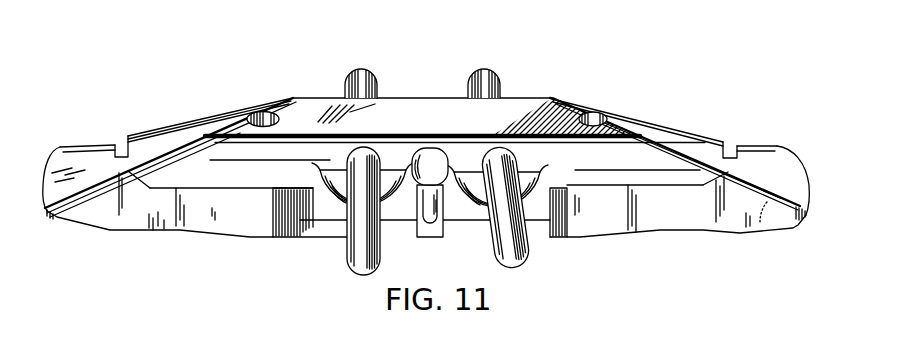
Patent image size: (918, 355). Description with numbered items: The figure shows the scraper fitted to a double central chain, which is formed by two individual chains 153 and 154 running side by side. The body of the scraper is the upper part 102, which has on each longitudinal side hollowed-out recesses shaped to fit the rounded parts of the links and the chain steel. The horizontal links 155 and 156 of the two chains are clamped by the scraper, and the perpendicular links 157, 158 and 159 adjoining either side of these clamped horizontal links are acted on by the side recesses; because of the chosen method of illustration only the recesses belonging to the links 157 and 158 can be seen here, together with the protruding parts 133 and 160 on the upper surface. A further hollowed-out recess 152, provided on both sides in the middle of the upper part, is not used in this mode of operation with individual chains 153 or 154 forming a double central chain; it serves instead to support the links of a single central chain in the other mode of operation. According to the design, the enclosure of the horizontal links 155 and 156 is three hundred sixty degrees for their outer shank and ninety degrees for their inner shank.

The body 102 is at (427, 171).
The hole 133 is at (600, 100).
The hollowed-out recess 152 is at (430, 147).
The individual chain 153 is at (325, 228).
The individual chain 154 is at (551, 226).
The horizontal link 155 is at (473, 192).
The horizontal link 156 is at (410, 188).
The perpendicular link 157 is at (534, 236).
The perpendicular link 158 is at (360, 236).
The perpendicular link 159 is at (503, 77).
The left nub 160 is at (350, 78).